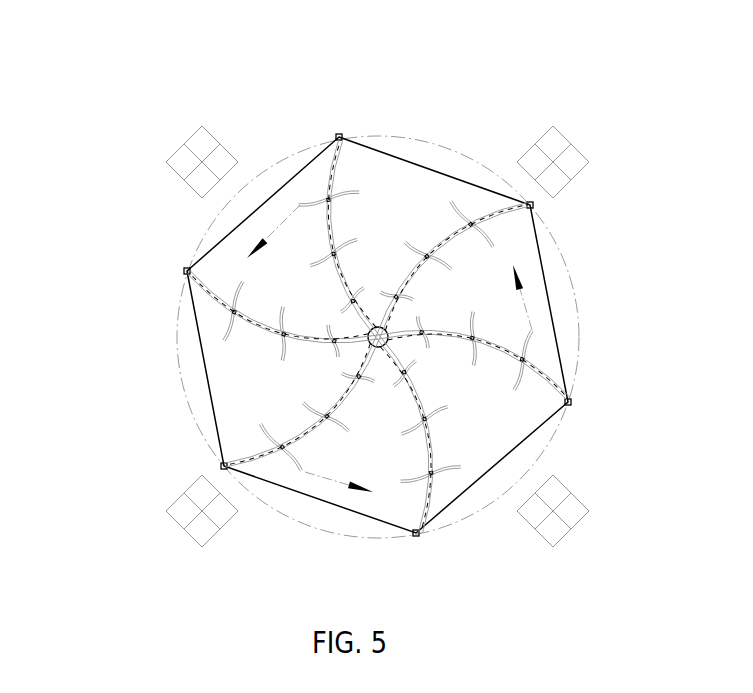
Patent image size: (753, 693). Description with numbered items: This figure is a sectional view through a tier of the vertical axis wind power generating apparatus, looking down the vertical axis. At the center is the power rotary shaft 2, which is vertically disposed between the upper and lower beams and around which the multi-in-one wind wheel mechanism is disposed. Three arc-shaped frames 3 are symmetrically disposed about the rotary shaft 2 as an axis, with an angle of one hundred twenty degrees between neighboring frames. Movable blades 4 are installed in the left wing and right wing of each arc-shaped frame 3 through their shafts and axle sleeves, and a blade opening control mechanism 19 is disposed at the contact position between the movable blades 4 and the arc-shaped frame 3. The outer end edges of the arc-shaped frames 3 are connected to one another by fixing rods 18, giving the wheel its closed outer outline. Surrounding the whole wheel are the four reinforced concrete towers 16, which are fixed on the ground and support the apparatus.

The power rotary shaft 2 is at (389, 331).
The arc-shaped frame 3 is at (322, 142).
The movable blade 4 is at (300, 218).
The reinforced concrete tower 16 is at (557, 152).
The fixing rod 18 is at (458, 178).
The blade opening control mechanism 19 is at (187, 268).